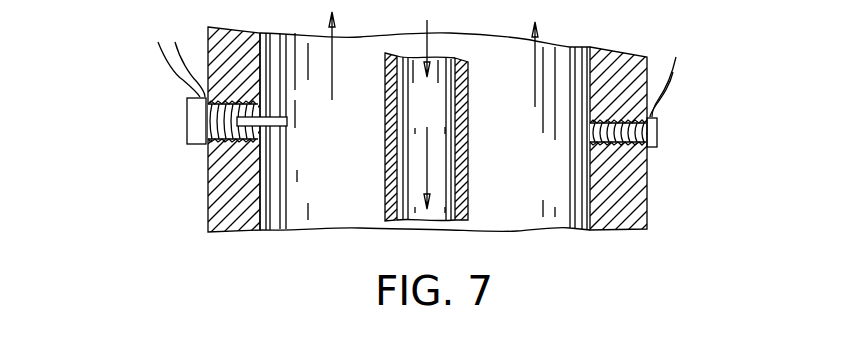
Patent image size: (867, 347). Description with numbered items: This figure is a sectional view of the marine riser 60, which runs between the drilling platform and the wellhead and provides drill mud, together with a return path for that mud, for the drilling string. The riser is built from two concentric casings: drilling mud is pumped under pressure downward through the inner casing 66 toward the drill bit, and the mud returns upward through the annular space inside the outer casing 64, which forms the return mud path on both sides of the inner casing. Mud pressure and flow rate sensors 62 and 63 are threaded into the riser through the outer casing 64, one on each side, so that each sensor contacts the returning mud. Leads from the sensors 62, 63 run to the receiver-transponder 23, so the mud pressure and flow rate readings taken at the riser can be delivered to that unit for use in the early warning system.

The receiver-transponder 23 is at (790, 61).
The marine riser 60 is at (422, 140).
The mud pressure and flow rate sensor 62 is at (660, 138).
The mud pressure and flow rate sensor 63 is at (188, 123).
The outer casing 64 is at (204, 215).
The inner casing 66 is at (468, 100).